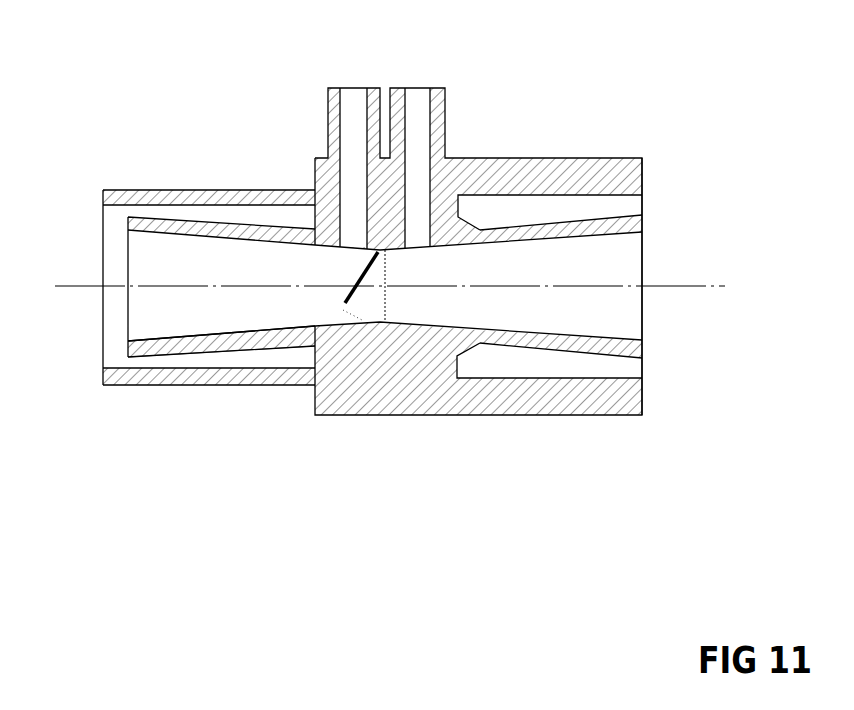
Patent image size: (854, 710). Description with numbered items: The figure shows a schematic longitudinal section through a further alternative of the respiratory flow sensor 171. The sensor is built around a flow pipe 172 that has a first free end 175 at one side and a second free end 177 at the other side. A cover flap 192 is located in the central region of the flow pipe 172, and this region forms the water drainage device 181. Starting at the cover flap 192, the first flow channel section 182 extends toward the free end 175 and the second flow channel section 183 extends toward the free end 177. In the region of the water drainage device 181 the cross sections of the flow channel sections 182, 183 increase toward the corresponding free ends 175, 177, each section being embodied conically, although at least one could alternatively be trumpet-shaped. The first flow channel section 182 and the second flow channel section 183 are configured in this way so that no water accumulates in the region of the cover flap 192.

The respiratory flow sensor 171 is at (578, 92).
The flow pipe 172 is at (236, 162).
The free end 175 is at (100, 200).
The free end 177 is at (642, 178).
The water drainage device 181 is at (303, 352).
The first flow channel section 182 is at (192, 346).
The second flow channel section 183 is at (569, 345).
The cover flap 192 is at (363, 263).